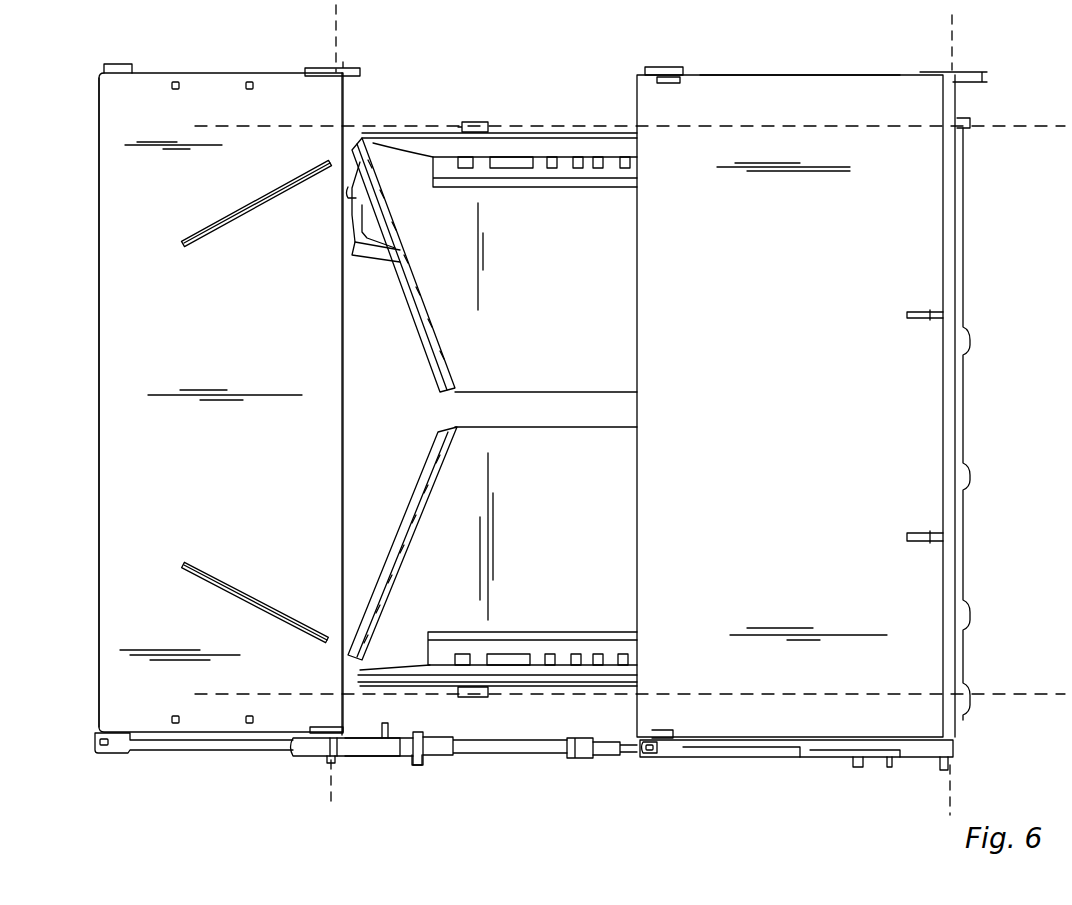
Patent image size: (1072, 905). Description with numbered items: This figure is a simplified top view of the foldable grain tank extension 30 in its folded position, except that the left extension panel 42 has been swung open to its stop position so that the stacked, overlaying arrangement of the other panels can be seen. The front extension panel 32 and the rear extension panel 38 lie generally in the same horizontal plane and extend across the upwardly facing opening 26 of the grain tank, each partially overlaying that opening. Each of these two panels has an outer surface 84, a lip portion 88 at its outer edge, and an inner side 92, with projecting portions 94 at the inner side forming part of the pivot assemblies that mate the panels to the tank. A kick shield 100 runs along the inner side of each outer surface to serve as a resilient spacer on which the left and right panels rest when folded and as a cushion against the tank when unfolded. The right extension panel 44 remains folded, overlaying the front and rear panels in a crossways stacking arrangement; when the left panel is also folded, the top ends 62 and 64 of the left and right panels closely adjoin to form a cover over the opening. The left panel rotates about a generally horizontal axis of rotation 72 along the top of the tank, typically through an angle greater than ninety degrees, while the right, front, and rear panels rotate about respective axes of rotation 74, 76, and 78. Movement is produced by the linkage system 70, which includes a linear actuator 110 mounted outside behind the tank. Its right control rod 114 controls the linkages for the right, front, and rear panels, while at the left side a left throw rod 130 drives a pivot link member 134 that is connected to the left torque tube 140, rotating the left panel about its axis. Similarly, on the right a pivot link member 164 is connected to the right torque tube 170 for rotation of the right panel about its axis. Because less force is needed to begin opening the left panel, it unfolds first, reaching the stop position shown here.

The upwardly facing opening 26 is at (371, 404).
The extension 30 is at (818, 53).
The front extension panel 32 is at (445, 277).
The rear extension panel 38 is at (440, 513).
The left extension panel 42 is at (200, 98).
The right extension panel 44 is at (880, 95).
The top end 62 is at (97, 183).
The top end 64 is at (636, 86).
The linkage system 70 is at (409, 774).
The axis of rotation 72 is at (340, 14).
The axis of rotation 74 is at (955, 46).
The axis of rotation 76 is at (1030, 128).
The axis of rotation 78 is at (1004, 692).
The outer surface 84 is at (526, 411).
The lip portion 88 is at (592, 425).
The inner side 92 is at (510, 131).
The projecting portion 94 is at (465, 126).
The kick shield 100 is at (452, 172).
The linear actuator 110 is at (445, 756).
The right control rod 114 is at (565, 758).
The left throw rod 130 is at (363, 758).
The pivot link member 134 is at (305, 757).
The left torque tube 140 is at (325, 764).
The pivot link member 164 is at (920, 760).
The right torque tube 170 is at (950, 766).